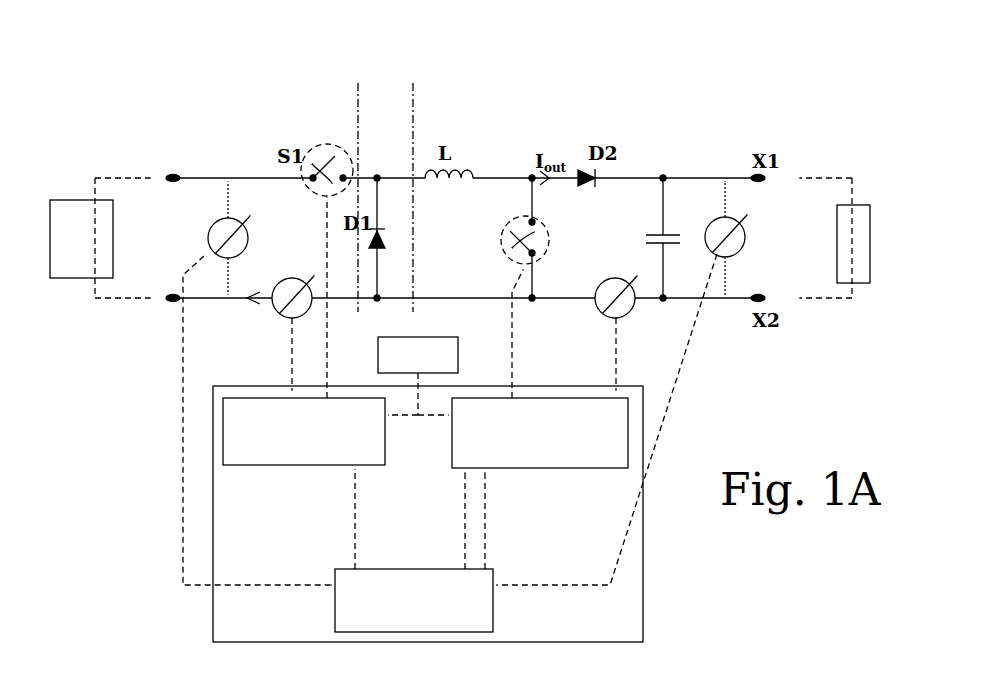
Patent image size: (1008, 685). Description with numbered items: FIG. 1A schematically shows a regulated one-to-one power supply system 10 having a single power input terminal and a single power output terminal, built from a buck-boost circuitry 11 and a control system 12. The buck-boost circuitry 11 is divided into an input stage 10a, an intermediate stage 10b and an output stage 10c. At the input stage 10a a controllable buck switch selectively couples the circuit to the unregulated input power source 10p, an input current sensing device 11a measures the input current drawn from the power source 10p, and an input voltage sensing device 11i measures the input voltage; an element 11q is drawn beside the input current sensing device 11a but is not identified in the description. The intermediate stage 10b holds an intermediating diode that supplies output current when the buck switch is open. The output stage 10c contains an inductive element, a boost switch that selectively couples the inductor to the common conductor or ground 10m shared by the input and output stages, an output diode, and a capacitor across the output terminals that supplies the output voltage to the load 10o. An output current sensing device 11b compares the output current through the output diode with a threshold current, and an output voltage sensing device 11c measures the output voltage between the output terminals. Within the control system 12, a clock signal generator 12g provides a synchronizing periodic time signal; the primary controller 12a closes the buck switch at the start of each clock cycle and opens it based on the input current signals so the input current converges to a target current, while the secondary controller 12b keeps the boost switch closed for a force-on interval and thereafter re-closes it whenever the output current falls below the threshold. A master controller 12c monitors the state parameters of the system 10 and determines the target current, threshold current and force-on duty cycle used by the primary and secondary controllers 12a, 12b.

The regulated power supply system 10 is at (170, 81).
The input stage 10a is at (319, 197).
The intermediate stage 10b is at (389, 197).
The output stage 10c is at (652, 196).
The unregulated input power source 10p is at (62, 200).
The load 10o is at (837, 232).
The common conductor/ground 10m is at (540, 300).
The buck-boost circuitry 11 is at (752, 75).
The input voltage sensing device 11i is at (210, 228).
The input current sensing device 11a is at (281, 282).
The input current direction indicator 11q is at (278, 311).
The output current sensing device 11b is at (605, 282).
The output voltage sensing device 11c is at (710, 228).
The control system 12 is at (238, 386).
The primary controller 12a is at (278, 467).
The secondary controller 12b is at (560, 469).
The master controller 12c is at (487, 569).
The clock signal generator 12g is at (378, 360).